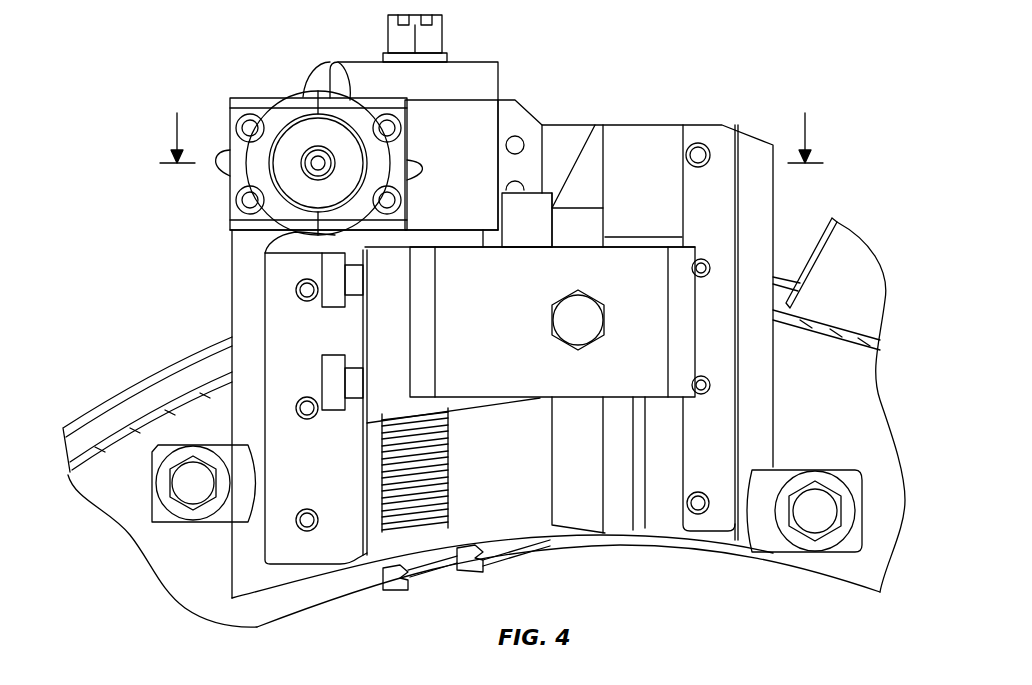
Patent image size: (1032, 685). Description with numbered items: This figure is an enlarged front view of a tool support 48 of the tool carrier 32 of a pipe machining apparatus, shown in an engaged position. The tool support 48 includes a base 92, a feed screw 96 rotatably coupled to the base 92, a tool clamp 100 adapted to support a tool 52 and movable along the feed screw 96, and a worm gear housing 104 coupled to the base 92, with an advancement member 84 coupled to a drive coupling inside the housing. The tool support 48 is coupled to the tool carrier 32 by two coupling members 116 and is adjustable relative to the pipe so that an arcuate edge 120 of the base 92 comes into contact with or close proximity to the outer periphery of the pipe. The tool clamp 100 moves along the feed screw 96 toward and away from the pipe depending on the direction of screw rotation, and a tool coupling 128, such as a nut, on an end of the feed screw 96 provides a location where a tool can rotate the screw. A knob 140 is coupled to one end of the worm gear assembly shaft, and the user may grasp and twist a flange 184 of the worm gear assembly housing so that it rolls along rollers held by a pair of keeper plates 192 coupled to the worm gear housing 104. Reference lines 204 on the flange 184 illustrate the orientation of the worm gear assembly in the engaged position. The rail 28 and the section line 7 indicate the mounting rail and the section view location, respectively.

The section line of FIG. 7 is at (491, 124).
The rail 28 is at (108, 400).
The tool carrier 32 is at (100, 480).
The tool support 48 is at (638, 74).
The tool 52 is at (580, 506).
The advancement member 84 is at (318, 84).
The base 92 is at (752, 150).
The feed screw 96 is at (446, 466).
The tool clamp 100 is at (560, 322).
The worm gear housing 104 is at (458, 116).
The coupling members 116 is at (181, 538).
The arcuate edge 120 is at (395, 592).
The tool coupling 128 is at (440, 35).
The knob 140 is at (278, 128).
The flange 184 is at (242, 184).
The keeper plates 192 is at (238, 160).
The reference lines 204 is at (332, 100).